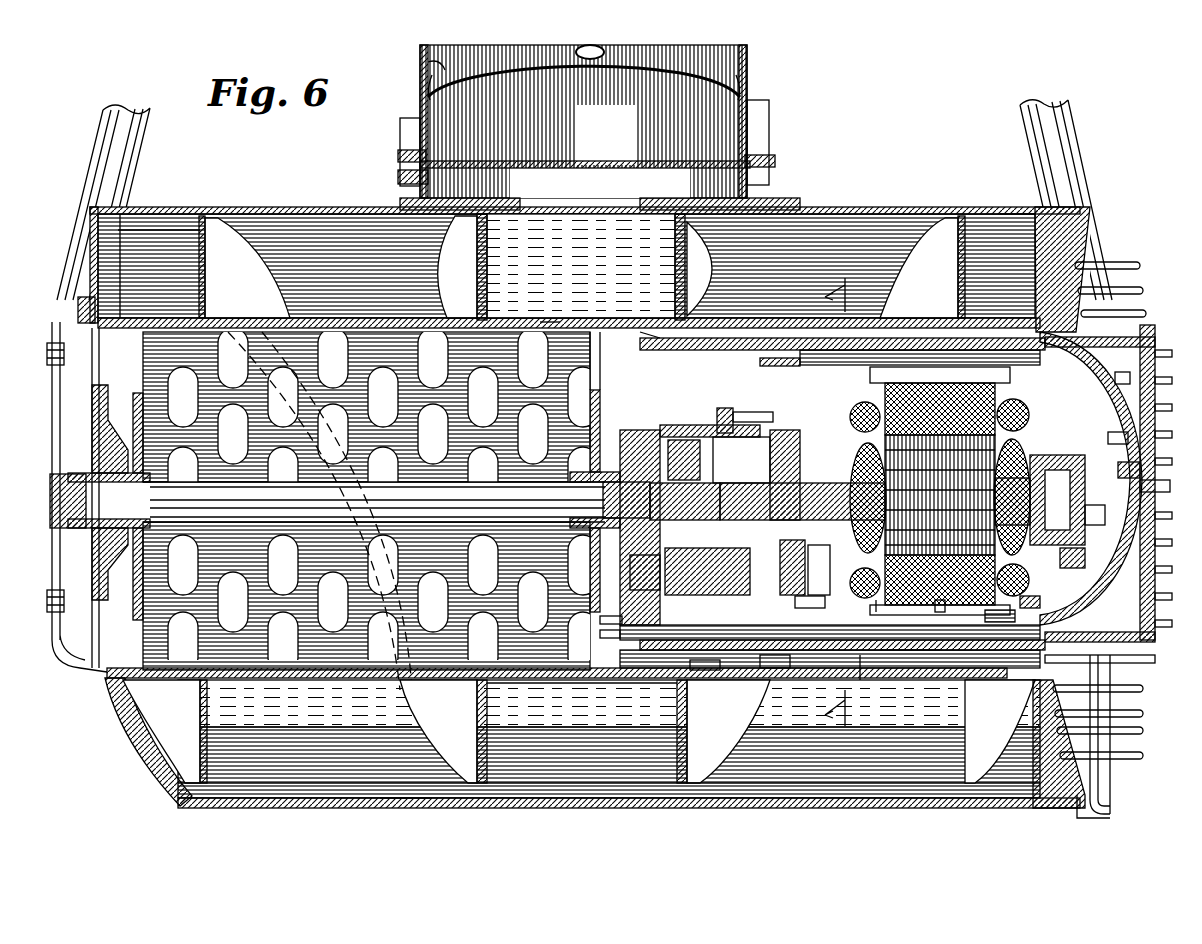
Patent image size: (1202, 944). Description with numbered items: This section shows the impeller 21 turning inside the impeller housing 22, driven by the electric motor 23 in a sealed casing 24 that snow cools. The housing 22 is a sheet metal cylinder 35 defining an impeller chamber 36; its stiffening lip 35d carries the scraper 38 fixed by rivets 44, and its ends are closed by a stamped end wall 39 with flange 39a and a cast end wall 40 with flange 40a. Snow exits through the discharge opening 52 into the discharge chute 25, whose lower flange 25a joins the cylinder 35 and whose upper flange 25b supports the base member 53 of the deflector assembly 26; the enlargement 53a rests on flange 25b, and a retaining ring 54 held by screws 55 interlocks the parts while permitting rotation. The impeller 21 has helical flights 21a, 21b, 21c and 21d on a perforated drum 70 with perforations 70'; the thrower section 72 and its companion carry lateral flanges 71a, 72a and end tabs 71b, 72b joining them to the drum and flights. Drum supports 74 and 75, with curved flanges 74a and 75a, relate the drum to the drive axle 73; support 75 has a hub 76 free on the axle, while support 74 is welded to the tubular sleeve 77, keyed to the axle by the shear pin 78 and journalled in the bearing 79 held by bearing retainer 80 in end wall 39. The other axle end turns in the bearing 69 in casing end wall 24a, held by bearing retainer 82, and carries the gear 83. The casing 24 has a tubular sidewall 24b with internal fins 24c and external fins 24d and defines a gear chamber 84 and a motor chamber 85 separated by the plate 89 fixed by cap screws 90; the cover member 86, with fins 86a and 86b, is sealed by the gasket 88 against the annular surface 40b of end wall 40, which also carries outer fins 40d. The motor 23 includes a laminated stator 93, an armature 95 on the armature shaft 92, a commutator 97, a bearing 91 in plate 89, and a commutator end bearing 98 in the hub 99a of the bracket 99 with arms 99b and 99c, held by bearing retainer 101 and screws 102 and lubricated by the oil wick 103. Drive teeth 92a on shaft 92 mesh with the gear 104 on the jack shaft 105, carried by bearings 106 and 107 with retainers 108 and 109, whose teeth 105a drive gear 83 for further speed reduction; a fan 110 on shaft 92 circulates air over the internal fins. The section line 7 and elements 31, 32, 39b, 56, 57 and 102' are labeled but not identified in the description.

The section line 7- 7 is at (837, 507).
The impeller 21 is at (410, 705).
The helical flight 21a is at (222, 232).
The helical flight 21b is at (489, 283).
The helical flight 21c is at (680, 258).
The helical flight 21d is at (945, 222).
The impeller housing 22 is at (299, 207).
The electric motor 23 is at (874, 620).
The sealed motor casing 24 is at (937, 674).
The casing end wall 24a is at (620, 620).
The tubular sidewall 24b is at (905, 652).
The internal cooling fins 24c is at (812, 365).
The external cooling fins 24d is at (645, 340).
The discharge chute 25 is at (620, 150).
The lower flange 25a is at (662, 200).
The peripheral flange 25b is at (410, 145).
The deflector assembly 26 is at (756, 58).
The flange 31 is at (55, 328).
The air tube 32 is at (1076, 112).
The sheet metal cylinder 35 is at (931, 212).
The stiffening lip 35d is at (405, 800).
The impeller chamber 36 is at (848, 212).
The scraper 38 is at (618, 806).
The end wall 39 is at (92, 240).
The peripheral flange 39a is at (112, 230).
The bolt 39b is at (78, 300).
The end wall 40 is at (1078, 256).
The peripheral flange 40a is at (1013, 212).
The annular surface 40b is at (1038, 674).
The cooling fins 40d is at (1132, 290).
The rivets 44 is at (356, 800).
The discharge opening 52 is at (756, 208).
The base member 53 is at (740, 98).
The cylindrical enlargement 53a is at (752, 138).
The retaining ring 54 is at (405, 176).
The screws 55 is at (405, 165).
The strap hook 56 is at (420, 60).
The strap end 57 is at (432, 95).
The bearing 69 is at (625, 545).
The perforated drum 70 is at (557, 516).
The perforations 70' is at (383, 500).
The lateral flange 71a is at (520, 683).
The end tabs 71b is at (470, 786).
The thrower section 72 is at (578, 226).
The lateral flange 72a is at (548, 322).
The end tabs 72b is at (491, 258).
The drum drive axle 73 is at (160, 522).
The drum support 74 is at (141, 594).
The lateral flange 74a is at (132, 676).
The drum support 75 is at (595, 540).
The lateral flange 75a is at (600, 330).
The central hub 76 is at (588, 522).
The tubular sleeve 77 is at (70, 475).
The shear pin 78 is at (50, 495).
The bearing 79 is at (96, 540).
The bearing retainer 80 is at (96, 435).
The bearing retainer 82 is at (641, 430).
The gear 83 is at (678, 438).
The gear chamber 84 is at (711, 428).
The motor chamber 85 is at (860, 676).
The cover member 86 is at (1130, 348).
The internal cooling fins 86a is at (1130, 662).
The external cooling fins 86b is at (1135, 648).
The sealing gasket 88 is at (1005, 620).
The divider plate 89 is at (775, 670).
The cap screws 90 is at (748, 418).
The motor bearing 91 is at (759, 468).
The armature shaft 92 is at (866, 475).
The drive teeth 92a is at (733, 485).
The laminated stator 93 is at (910, 384).
The armature 95 is at (940, 612).
The commutator 97 is at (1035, 495).
The commutator end motor bearing 98 is at (1142, 470).
The bracket 99 is at (1125, 420).
The central hub 99a is at (1125, 440).
The arm 99b is at (1035, 598).
The arm 99c is at (1130, 380).
The bearing retainer 101 is at (1095, 530).
The screws 102 is at (1057, 500).
The bearing housing lower 102' is at (1086, 562).
The oil wick 103 is at (1150, 486).
The gear 104 is at (698, 672).
The jack shaft 105 is at (705, 596).
The drive teeth 105a is at (675, 592).
The bearing 106 is at (598, 587).
The bearing 107 is at (805, 586).
The bearing retainer 108 is at (625, 635).
The bearing retainer 109 is at (810, 606).
The fan 110 is at (825, 588).